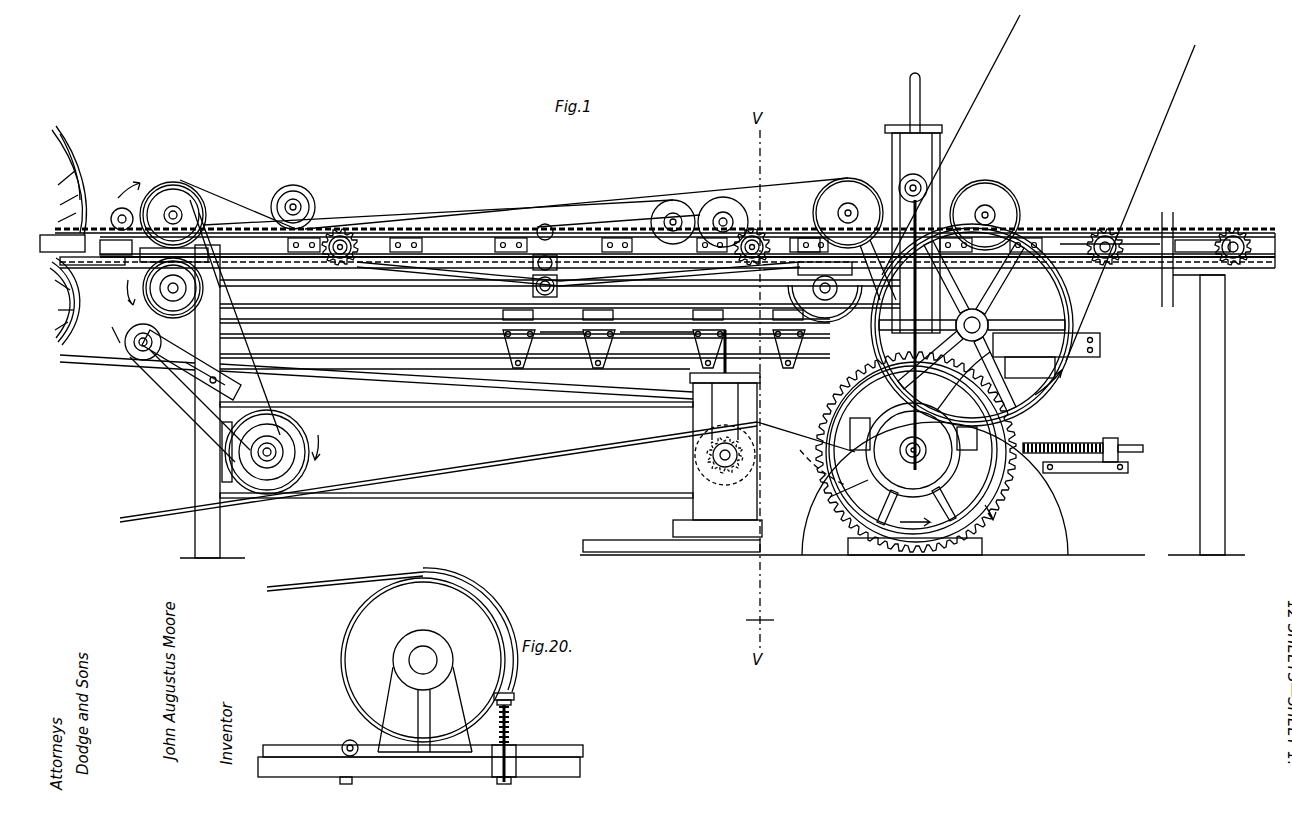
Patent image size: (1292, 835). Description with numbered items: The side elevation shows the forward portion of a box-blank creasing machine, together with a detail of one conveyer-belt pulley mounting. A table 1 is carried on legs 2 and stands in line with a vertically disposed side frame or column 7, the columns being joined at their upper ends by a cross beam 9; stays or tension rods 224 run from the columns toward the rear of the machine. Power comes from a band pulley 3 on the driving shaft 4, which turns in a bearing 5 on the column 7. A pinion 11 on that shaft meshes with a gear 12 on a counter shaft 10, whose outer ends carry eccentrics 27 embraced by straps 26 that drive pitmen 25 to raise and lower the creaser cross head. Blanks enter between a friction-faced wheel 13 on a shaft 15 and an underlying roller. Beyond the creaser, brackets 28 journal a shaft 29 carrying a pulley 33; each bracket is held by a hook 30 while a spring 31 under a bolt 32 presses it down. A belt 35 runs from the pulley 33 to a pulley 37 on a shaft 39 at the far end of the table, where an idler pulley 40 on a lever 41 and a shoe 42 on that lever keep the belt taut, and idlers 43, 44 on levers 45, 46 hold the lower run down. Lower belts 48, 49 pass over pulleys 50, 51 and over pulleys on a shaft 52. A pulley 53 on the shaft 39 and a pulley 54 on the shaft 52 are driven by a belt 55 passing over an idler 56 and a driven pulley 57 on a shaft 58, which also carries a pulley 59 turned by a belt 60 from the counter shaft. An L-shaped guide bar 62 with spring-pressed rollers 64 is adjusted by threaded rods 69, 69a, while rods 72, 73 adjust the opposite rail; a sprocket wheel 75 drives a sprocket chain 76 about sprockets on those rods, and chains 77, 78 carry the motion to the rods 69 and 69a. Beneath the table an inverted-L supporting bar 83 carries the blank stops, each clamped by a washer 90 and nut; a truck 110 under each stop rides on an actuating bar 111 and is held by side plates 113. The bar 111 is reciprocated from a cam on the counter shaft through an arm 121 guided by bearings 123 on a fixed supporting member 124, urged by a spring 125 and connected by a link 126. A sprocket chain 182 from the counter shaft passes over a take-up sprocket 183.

In FIG. 1, the table 1 is at (1155, 268).
In FIG. 20, the table 1 is at (560, 762).
In FIG. 1, the legs 2 is at (220, 522).
In FIG. 1, the band pulley 3 is at (1075, 302).
In FIG. 1, the driving shaft 4 is at (985, 318).
In FIG. 1, the bearing 5 is at (873, 402).
In FIG. 1, the side frame or column 7 is at (1045, 528).
In FIG. 1, the cross beam 9 is at (921, 100).
In FIG. 1, the counter shaft 10 is at (920, 455).
In FIG. 1, the pinion 11 is at (1038, 354).
In FIG. 1, the gear 12 is at (845, 390).
In FIG. 1, the pulley or wheel 13 is at (1010, 200).
In FIG. 1, the shaft 15 is at (997, 215).
In FIG. 1, the pitman 25 is at (913, 295).
In FIG. 1, the strap 26 is at (962, 452).
In FIG. 1, the eccentric 27 is at (913, 450).
In FIG. 20, the bracket 28 is at (450, 695).
In FIG. 1, the shaft 29 is at (835, 200).
In FIG. 20, the shaft 29 is at (430, 658).
In FIG. 20, the hook 30 is at (348, 741).
In FIG. 20, the spring 31 is at (512, 704).
In FIG. 20, the bolt 32 is at (512, 730).
In FIG. 1, the pulley 33 is at (504, 296).
In FIG. 20, the pulley 33 is at (423, 660).
In FIG. 20, the belt 35 is at (305, 588).
In FIG. 1, the pulley 37 is at (165, 184).
In FIG. 1, the shaft 39 is at (180, 212).
In FIG. 1, the idler pulley 40 is at (318, 210).
In FIG. 1, the lever 41 is at (246, 203).
In FIG. 1, the shoe 42 is at (118, 214).
In FIG. 1, the idler 43 is at (673, 210).
In FIG. 1, the idler 44 is at (735, 214).
In FIG. 1, the lever 45 is at (620, 205).
In FIG. 1, the lever 46 is at (723, 212).
In FIG. 1, the belt 48 is at (660, 325).
In FIG. 1, the belt 49 is at (103, 256).
In FIG. 1, the pulley 50 is at (832, 306).
In FIG. 1, the pulley 51 is at (144, 290).
In FIG. 1, the shaft 52 is at (186, 298).
In FIG. 1, the pulley 53 is at (175, 200).
In FIG. 1, the pulley 54 is at (125, 335).
In FIG. 1, the belt 55 is at (185, 410).
In FIG. 1, the idler 56 is at (140, 362).
In FIG. 1, the driven pulley 57 is at (298, 432).
In FIG. 1, the shaft 58 is at (308, 455).
In FIG. 1, the pulley 59 is at (270, 492).
In FIG. 1, the belt 60 is at (606, 404).
In FIG. 1, the bar 62 is at (1190, 240).
In FIG. 1, the roller 64 is at (616, 258).
In FIG. 1, the threaded rod 69 is at (1105, 236).
In FIG. 1, the threaded rod 69a is at (1240, 236).
In FIG. 1, the rod 72 is at (752, 238).
In FIG. 1, the rod 73 is at (350, 238).
In FIG. 1, the sprocket wheel 75 is at (533, 280).
In FIG. 1, the sprocket chain 76 is at (464, 230).
In FIG. 1, the chain 77 is at (795, 236).
In FIG. 1, the chain 78 is at (1145, 236).
In FIG. 1, the supporting bar 83 is at (560, 294).
In FIG. 1, the washer 90 is at (535, 316).
In FIG. 1, the truck 110 is at (536, 333).
In FIG. 1, the actuating bar 111 is at (525, 344).
In FIG. 1, the side plate 113 is at (538, 347).
In FIG. 1, the arm 121 is at (932, 434).
In FIG. 1, the bearing 123 is at (1113, 443).
In FIG. 1, the fixed supporting member 124 is at (1078, 468).
In FIG. 1, the spring 125 is at (1068, 444).
In FIG. 1, the link 126 is at (1030, 367).
In FIG. 1, the sprocket chain 182 is at (498, 461).
In FIG. 1, the take up or tensioning sprocket 183 is at (693, 455).
In FIG. 1, the stays or tension rods 224 is at (622, 534).